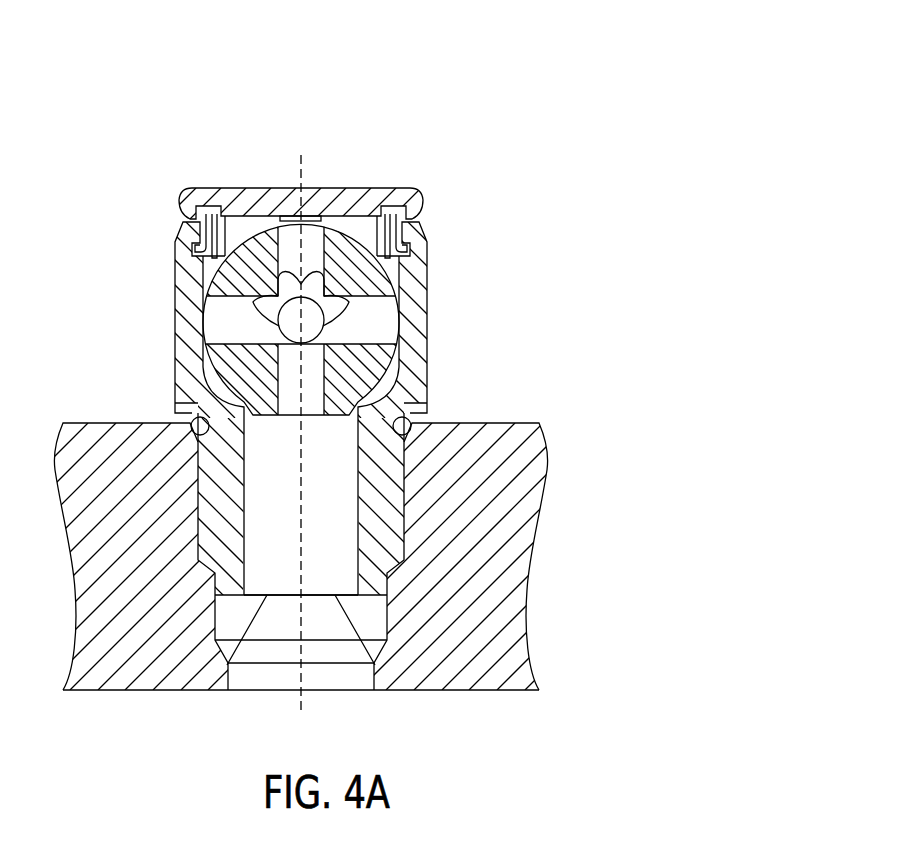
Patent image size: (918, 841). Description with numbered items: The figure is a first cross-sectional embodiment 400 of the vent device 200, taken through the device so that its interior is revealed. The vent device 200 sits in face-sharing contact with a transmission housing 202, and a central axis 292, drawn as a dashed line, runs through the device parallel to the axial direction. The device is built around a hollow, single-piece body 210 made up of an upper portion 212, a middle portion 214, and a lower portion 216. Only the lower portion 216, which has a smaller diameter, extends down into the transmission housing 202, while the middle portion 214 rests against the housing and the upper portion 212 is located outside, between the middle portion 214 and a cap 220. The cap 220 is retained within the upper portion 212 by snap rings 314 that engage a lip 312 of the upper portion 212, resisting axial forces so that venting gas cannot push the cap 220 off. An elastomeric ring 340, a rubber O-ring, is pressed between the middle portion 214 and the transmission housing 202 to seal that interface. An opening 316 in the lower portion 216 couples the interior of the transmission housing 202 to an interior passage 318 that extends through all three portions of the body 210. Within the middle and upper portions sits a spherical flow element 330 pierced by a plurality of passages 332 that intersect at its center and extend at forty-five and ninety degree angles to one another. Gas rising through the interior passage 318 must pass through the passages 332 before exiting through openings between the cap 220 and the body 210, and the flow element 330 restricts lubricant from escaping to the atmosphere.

The first cross-sectional embodiment 400 is at (498, 76).
The vent device 200 is at (472, 182).
The transmission housing 202 is at (88, 421).
The body 210 is at (474, 367).
The upper portion 212 is at (180, 262).
The middle portion 214 is at (175, 372).
The lower portion 216 is at (198, 534).
The cap 220 is at (243, 189).
The central axis 292 is at (303, 705).
The lip 312 is at (205, 226).
The snap rings 314 is at (414, 262).
The opening 316 is at (228, 667).
The interior passage 318 is at (285, 540).
The flow element 330 is at (393, 375).
The passages 332 is at (195, 323).
The elastomeric ring 340 is at (196, 437).